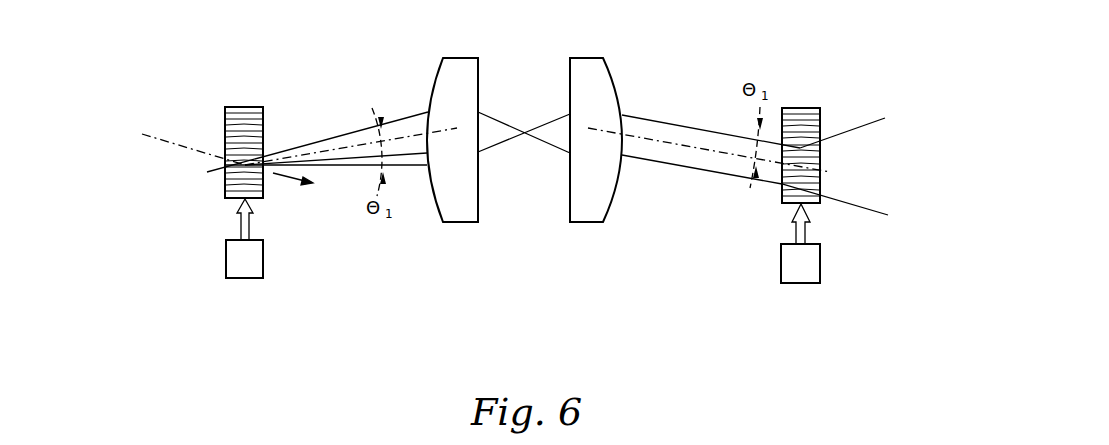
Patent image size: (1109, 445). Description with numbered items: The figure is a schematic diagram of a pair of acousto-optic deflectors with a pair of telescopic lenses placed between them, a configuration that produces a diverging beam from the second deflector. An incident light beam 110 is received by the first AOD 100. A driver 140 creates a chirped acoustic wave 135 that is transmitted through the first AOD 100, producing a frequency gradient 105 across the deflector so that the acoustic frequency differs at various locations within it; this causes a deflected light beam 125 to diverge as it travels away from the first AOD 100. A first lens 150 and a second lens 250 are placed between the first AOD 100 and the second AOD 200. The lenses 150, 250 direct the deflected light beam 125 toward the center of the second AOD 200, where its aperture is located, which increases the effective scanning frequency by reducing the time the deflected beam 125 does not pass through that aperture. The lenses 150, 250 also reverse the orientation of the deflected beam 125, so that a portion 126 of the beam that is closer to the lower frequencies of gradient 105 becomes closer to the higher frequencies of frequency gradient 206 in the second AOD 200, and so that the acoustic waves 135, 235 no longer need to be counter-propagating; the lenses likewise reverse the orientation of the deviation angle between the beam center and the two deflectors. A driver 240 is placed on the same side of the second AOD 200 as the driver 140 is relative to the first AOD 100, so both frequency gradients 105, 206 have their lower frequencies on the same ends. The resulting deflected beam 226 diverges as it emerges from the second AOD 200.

The first AOD 100 is at (247, 106).
The frequency gradient 105 is at (225, 121).
The incident light beam 110 is at (171, 144).
The deflected light beam 125 is at (406, 115).
The portion of deflected beam 126 is at (357, 158).
The chirped acoustic wave 135 is at (241, 225).
The driver 140 is at (226, 259).
The first lens 150 is at (463, 222).
The second AOD 200 is at (801, 107).
The frequency gradient 206 is at (820, 117).
The deflected beam 226 is at (883, 128).
The acoustic wave 235 is at (806, 233).
The driver 240 is at (820, 262).
The second lens 250 is at (588, 222).